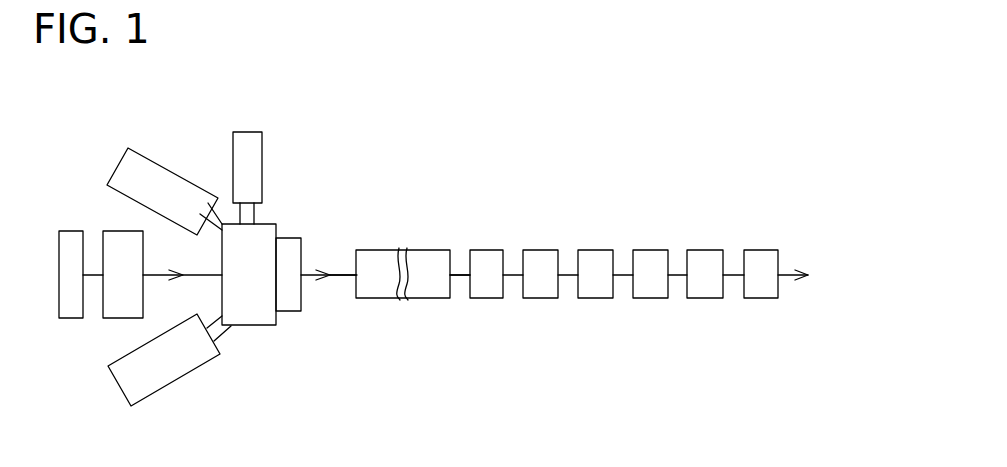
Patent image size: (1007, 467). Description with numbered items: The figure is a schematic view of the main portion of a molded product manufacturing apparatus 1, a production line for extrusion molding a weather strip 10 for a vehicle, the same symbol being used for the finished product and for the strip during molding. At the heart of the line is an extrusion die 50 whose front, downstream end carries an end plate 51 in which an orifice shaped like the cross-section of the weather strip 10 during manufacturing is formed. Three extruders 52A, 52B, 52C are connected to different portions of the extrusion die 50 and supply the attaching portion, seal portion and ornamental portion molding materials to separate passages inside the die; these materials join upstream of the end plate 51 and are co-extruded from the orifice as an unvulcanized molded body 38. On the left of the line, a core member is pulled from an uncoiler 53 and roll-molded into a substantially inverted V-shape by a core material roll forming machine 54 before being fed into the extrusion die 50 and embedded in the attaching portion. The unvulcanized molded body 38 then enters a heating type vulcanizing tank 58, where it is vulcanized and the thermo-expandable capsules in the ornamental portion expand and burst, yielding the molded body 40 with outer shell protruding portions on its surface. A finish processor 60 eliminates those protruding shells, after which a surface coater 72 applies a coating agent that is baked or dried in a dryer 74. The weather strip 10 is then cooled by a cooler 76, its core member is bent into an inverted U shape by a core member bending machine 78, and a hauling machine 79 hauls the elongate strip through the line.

The molded product manufacturing apparatus 1 is at (663, 138).
The weather strip 10 is at (785, 270).
The unvulcanized molded body 38 is at (342, 270).
The molded body 40 is at (458, 270).
The extrusion die 50 is at (257, 328).
The end plate 51 is at (287, 307).
The extruder 52A is at (137, 157).
The extruder 52B is at (168, 373).
The extruder 52C is at (261, 147).
The uncoiler 53 is at (73, 316).
The core material roll forming machine 54 is at (128, 313).
The heating type vulcanizing tank 58 is at (430, 300).
The finish processor 60 is at (490, 300).
The surface coater 72 is at (545, 300).
The dryer 74 is at (600, 300).
The cooler 76 is at (655, 300).
The core member bending machine 78 is at (710, 298).
The hauling machine 79 is at (766, 298).